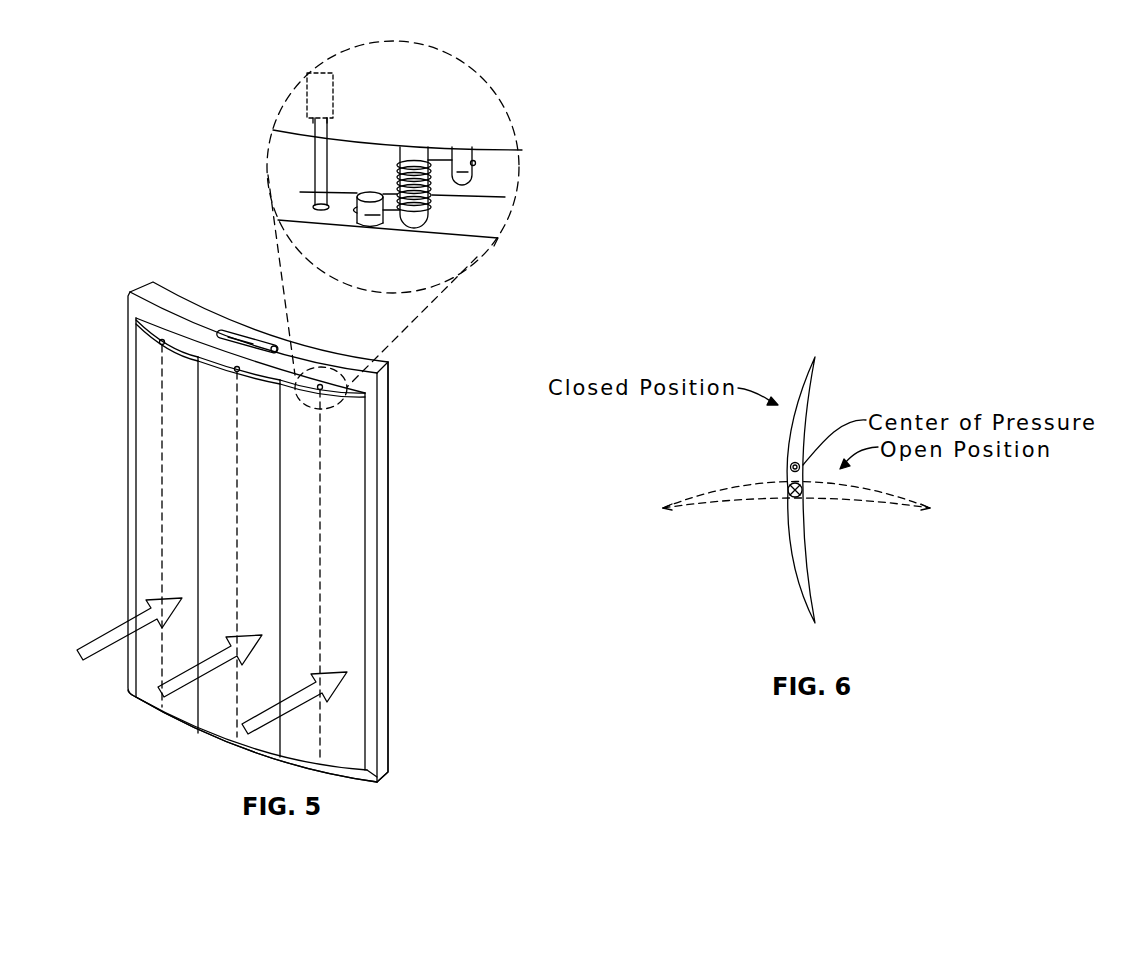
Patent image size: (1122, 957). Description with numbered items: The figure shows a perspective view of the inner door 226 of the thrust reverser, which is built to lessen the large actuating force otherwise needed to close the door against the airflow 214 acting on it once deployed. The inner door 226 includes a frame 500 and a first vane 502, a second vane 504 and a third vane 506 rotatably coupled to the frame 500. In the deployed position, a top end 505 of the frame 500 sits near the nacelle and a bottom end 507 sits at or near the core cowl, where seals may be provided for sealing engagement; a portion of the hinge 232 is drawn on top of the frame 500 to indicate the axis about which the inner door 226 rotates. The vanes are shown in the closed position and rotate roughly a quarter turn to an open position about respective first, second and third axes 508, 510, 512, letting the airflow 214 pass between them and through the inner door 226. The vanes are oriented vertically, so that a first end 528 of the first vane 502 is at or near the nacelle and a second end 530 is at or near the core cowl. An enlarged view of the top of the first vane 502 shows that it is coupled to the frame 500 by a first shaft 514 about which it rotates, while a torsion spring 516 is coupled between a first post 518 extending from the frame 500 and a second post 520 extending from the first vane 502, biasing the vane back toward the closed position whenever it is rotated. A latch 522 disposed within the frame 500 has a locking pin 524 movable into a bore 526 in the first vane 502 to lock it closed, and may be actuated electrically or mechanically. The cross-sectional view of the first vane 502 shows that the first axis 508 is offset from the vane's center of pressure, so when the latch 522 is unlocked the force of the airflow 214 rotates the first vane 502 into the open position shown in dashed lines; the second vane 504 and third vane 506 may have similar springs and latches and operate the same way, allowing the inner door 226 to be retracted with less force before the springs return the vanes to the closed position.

In FIG. 5, the airflow 214 is at (100, 632).
In FIG. 5, the inner door 226 is at (169, 219).
In FIG. 5, the hinge 232 is at (240, 338).
In FIG. 5, the frame 500 is at (392, 434).
In FIG. 5, the first vane 502 is at (343, 551).
In FIG. 6, the first vane 502 is at (804, 412).
In FIG. 5, the second vane 504 is at (210, 540).
In FIG. 5, the top end 505 is at (150, 288).
In FIG. 5, the third vane 506 is at (150, 427).
In FIG. 5, the bottom end 507 is at (146, 720).
In FIG. 5, the first axis 508 is at (322, 602).
In FIG. 6, the first axis 508 is at (787, 486).
In FIG. 5, the second axis 510 is at (235, 597).
In FIG. 5, the third axis 512 is at (160, 475).
In FIG. 5, the first shaft 514 is at (410, 155).
In FIG. 5, the torsion spring 516 is at (428, 207).
In FIG. 5, the first post 518 is at (467, 173).
In FIG. 5, the second post 520 is at (373, 223).
In FIG. 5, the latch 522 is at (307, 92).
In FIG. 5, the locking pin 524 is at (315, 165).
In FIG. 5, the bore 526 is at (300, 207).
In FIG. 5, the first end 528 is at (338, 392).
In FIG. 5, the second end 530 is at (339, 773).